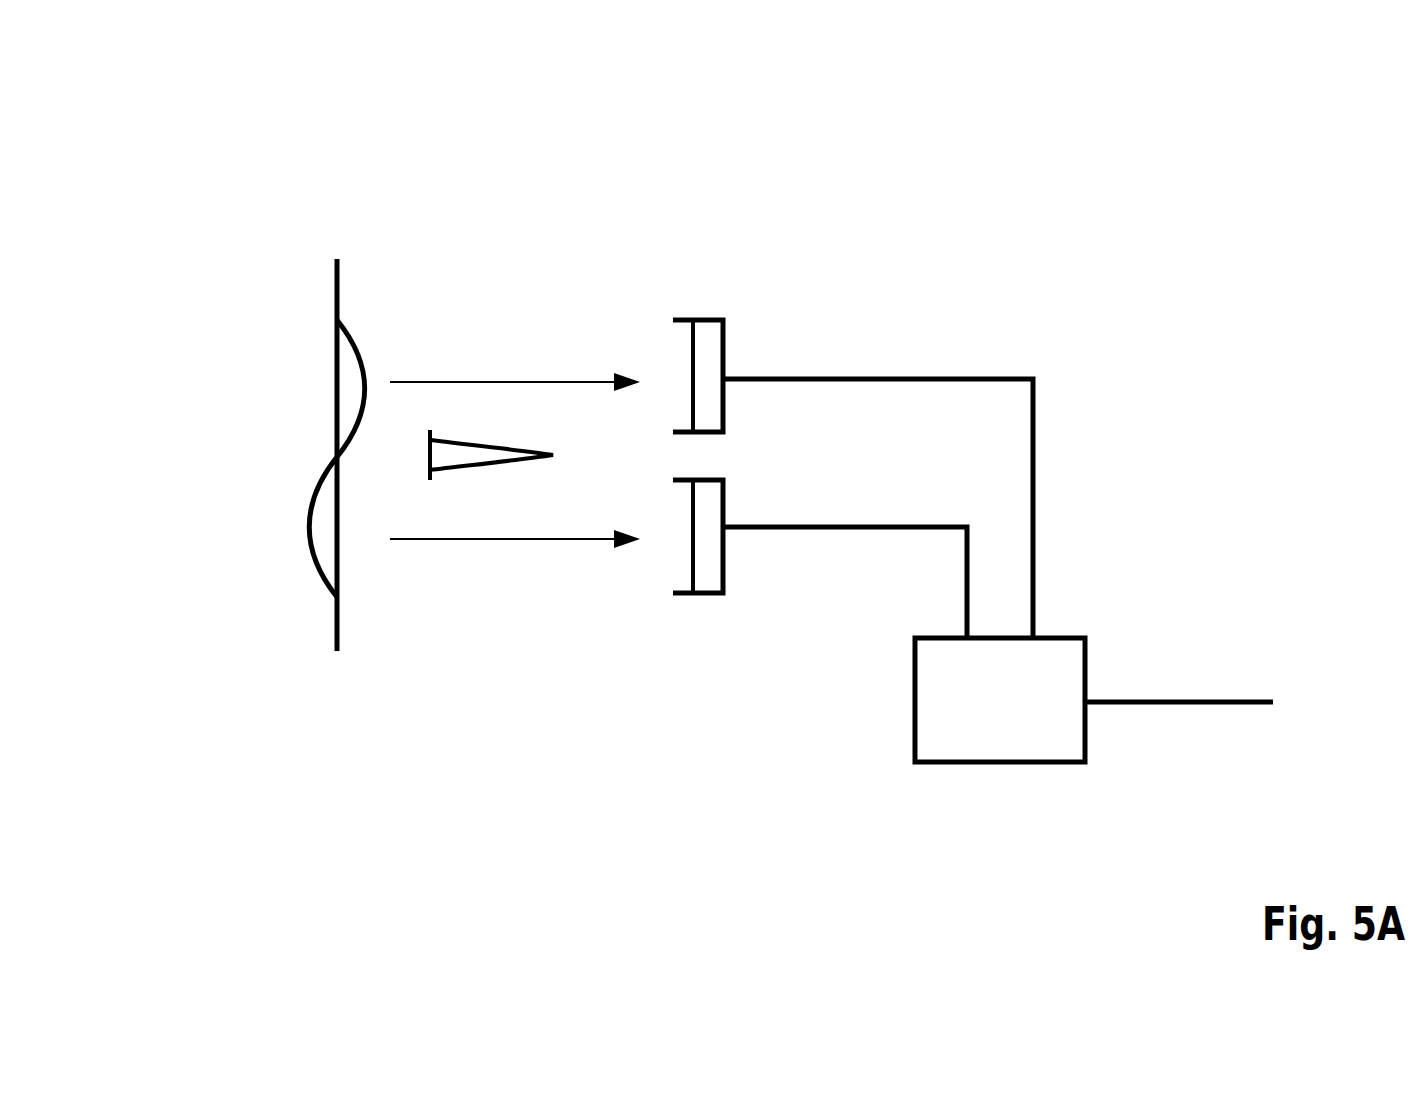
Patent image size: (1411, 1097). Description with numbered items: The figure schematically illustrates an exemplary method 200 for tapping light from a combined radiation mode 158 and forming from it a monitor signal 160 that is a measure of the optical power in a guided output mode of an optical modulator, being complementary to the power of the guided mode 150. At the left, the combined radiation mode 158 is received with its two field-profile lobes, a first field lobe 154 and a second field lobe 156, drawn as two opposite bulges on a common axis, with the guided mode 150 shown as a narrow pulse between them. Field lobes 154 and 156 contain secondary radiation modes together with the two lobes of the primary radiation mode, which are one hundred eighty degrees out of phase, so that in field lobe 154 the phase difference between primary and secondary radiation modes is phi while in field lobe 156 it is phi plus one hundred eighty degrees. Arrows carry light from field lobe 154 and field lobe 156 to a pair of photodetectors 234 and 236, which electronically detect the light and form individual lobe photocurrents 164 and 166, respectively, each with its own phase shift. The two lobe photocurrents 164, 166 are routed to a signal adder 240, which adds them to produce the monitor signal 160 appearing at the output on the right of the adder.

The method 200 is at (1336, 120).
The combined radiation mode 158 is at (225, 436).
The field lobe 154 is at (239, 389).
The field lobe 156 is at (225, 532).
The guided mode 150 is at (480, 565).
The photodetector 234 is at (696, 273).
The photodetector 236 is at (696, 684).
The lobe photocurrent 164 is at (878, 424).
The lobe photocurrent 166 is at (845, 612).
The signal adder 240 is at (1000, 763).
The monitor signal 160 is at (1179, 574).